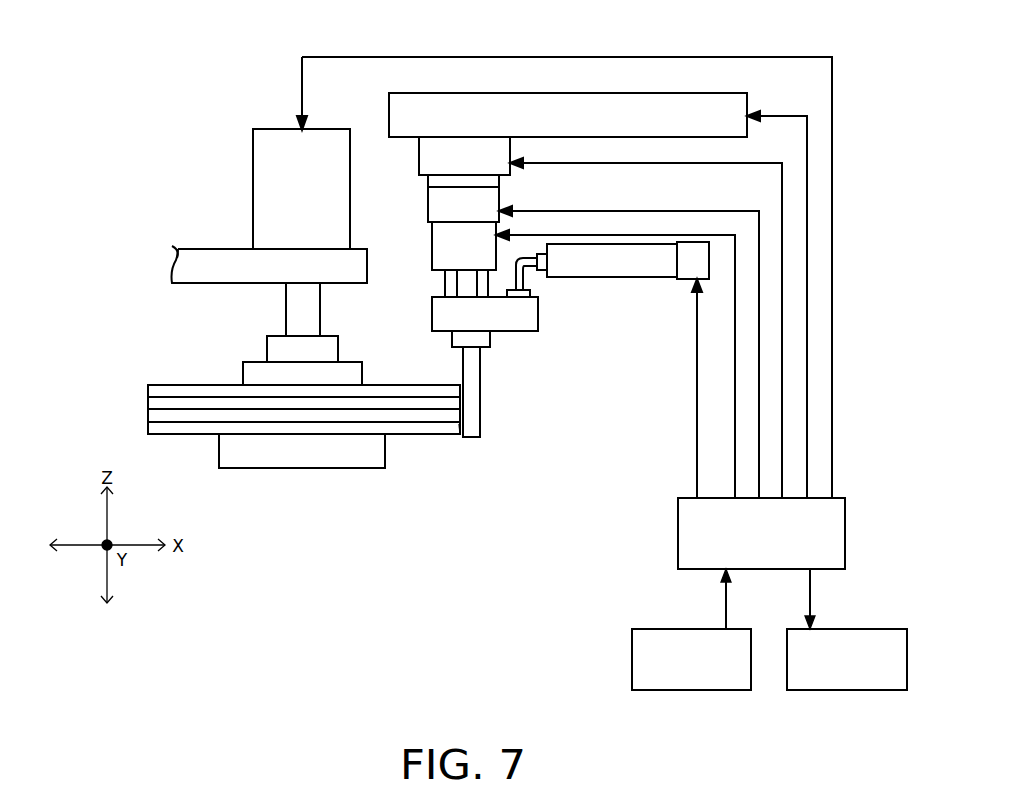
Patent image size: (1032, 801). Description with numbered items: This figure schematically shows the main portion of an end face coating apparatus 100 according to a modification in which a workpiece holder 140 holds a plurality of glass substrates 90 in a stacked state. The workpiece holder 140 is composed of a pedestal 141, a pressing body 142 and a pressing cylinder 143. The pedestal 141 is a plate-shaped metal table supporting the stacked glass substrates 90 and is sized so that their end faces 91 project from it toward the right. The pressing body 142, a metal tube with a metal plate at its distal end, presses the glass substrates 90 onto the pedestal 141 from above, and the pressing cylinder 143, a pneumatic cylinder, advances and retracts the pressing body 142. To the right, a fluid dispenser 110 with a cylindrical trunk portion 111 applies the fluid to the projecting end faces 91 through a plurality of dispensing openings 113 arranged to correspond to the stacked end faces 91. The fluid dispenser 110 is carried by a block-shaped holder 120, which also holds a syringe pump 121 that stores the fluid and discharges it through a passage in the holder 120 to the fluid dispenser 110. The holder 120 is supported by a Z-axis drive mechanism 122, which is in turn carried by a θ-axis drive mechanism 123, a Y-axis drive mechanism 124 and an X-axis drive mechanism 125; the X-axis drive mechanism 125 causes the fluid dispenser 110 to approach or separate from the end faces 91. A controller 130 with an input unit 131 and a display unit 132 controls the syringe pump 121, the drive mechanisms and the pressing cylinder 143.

The end face coating apparatus 100 is at (152, 33).
The glass substrate 90 is at (148, 416).
The end face 91 is at (458, 428).
The fluid dispenser 110 is at (570, 335).
The trunk portion 111 is at (490, 338).
The dispensing openings 113 is at (480, 365).
The holder 120 is at (432, 313).
The syringe pump 121 is at (622, 277).
The Z-axis drive mechanism 122 is at (432, 263).
The θ-axis drive mechanism 123 is at (428, 211).
The Y-axis drive mechanism 124 is at (419, 163).
The X-axis drive mechanism 125 is at (675, 93).
The controller 130 is at (678, 532).
The input unit 131 is at (692, 690).
The display unit 132 is at (847, 690).
The workpiece holder 140 is at (190, 222).
The pedestal 141 is at (219, 457).
The pressing body 142 is at (243, 362).
The pressing cylinder 143 is at (253, 156).